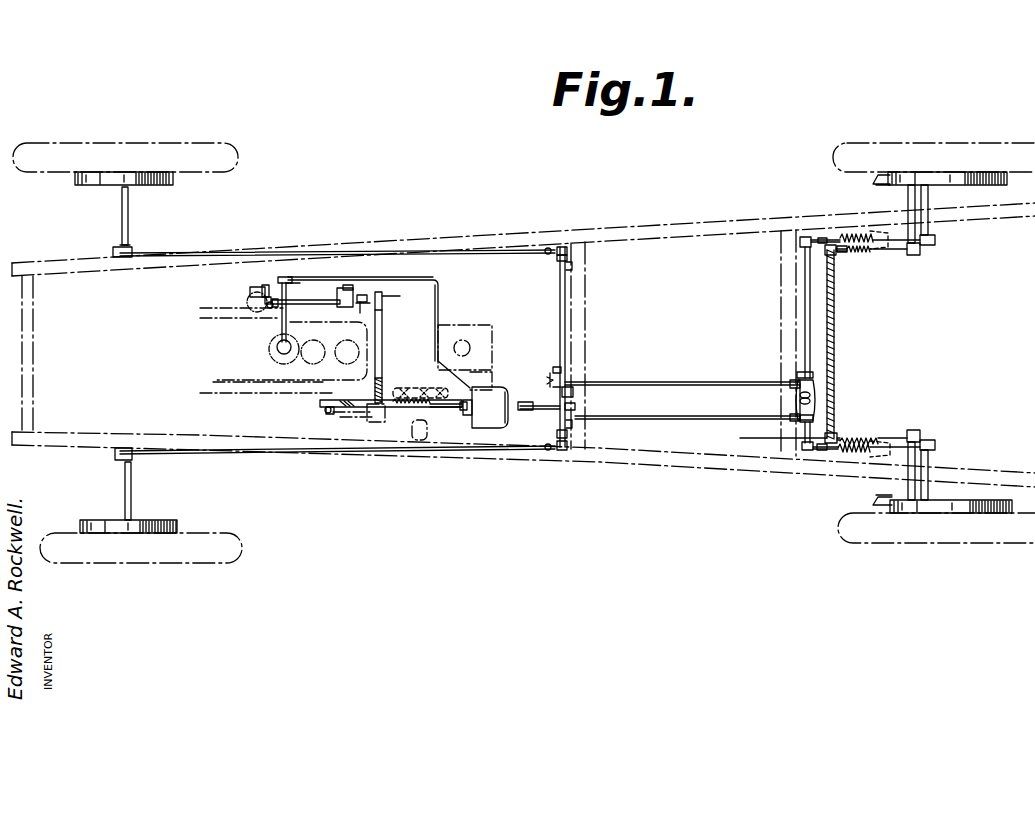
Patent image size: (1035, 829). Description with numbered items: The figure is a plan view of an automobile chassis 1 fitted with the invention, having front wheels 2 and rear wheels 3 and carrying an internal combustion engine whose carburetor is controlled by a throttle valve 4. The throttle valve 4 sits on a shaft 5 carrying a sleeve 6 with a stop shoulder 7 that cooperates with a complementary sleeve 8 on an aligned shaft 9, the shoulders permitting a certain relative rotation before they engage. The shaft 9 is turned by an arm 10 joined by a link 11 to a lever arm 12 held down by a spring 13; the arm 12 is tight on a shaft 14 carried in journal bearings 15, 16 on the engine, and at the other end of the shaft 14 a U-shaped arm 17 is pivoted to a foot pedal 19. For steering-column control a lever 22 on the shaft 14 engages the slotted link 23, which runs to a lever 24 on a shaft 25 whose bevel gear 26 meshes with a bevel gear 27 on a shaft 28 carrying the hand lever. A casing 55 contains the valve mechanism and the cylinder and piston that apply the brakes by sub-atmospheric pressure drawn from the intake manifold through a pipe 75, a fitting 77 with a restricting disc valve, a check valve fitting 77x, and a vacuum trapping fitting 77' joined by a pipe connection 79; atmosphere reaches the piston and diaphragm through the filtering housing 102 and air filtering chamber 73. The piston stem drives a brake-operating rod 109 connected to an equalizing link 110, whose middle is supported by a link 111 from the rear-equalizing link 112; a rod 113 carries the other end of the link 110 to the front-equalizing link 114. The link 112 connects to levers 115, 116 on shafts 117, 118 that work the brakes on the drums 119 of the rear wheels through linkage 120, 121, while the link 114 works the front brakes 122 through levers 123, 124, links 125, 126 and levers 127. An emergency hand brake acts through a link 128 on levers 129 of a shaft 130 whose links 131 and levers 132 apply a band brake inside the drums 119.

The chassis 1 is at (698, 462).
The front wheels 2 is at (143, 152).
The rear wheels 3 is at (960, 150).
The throttle valve 4 is at (257, 295).
The shaft 5 is at (267, 298).
The sleeve 6 is at (270, 301).
The stop shoulder 7 is at (275, 298).
The complementary sleeve 8 is at (289, 278).
The shaft 9 is at (301, 300).
The arm 10 is at (335, 288).
The link 11 is at (348, 285).
The lever arm 12 is at (360, 294).
The spring 13 is at (364, 300).
The shaft 14 is at (382, 296).
The journal bearing 15 is at (398, 296).
The journal bearing 16 is at (381, 378).
The arm 17 is at (385, 390).
The foot pedal 19 is at (410, 389).
The lever 22 is at (378, 408).
The link 23 is at (344, 408).
The lever 24 is at (321, 400).
The shaft 25 is at (323, 402).
The bevel gear 26 is at (326, 411).
The bevel gear 27 is at (330, 414).
The shaft 28 is at (452, 408).
The casing 55 is at (490, 420).
The air filtering chamber 73 is at (465, 414).
The pipe 75 is at (440, 292).
The fitting 77 is at (247, 247).
The fitting 77' is at (265, 349).
The check valve fitting 77x is at (295, 282).
The pipe connection 79 is at (281, 332).
The housing 102 is at (518, 400).
The brake-operating rod 109 is at (662, 417).
The link 110 is at (798, 401).
The link 111 is at (820, 384).
The link 112 is at (815, 402).
The rod 113 is at (686, 381).
The link 114 is at (550, 376).
The lever 115 is at (813, 375).
The lever 116 is at (815, 420).
The shaft 117 is at (805, 308).
The shaft 118 is at (806, 426).
The drums 119 is at (987, 171).
The linkage 120 is at (852, 235).
The linkage 121 is at (932, 243).
The front brakes 122 is at (158, 184).
The lever 123 is at (568, 372).
The lever 124 is at (574, 392).
The link 125 is at (478, 250).
The link 126 is at (498, 456).
The levers 127 is at (132, 251).
The link 128 is at (758, 441).
The levers 129 is at (830, 444).
The shaft 130 is at (834, 321).
The links 131 is at (866, 252).
The levers 132 is at (916, 255).